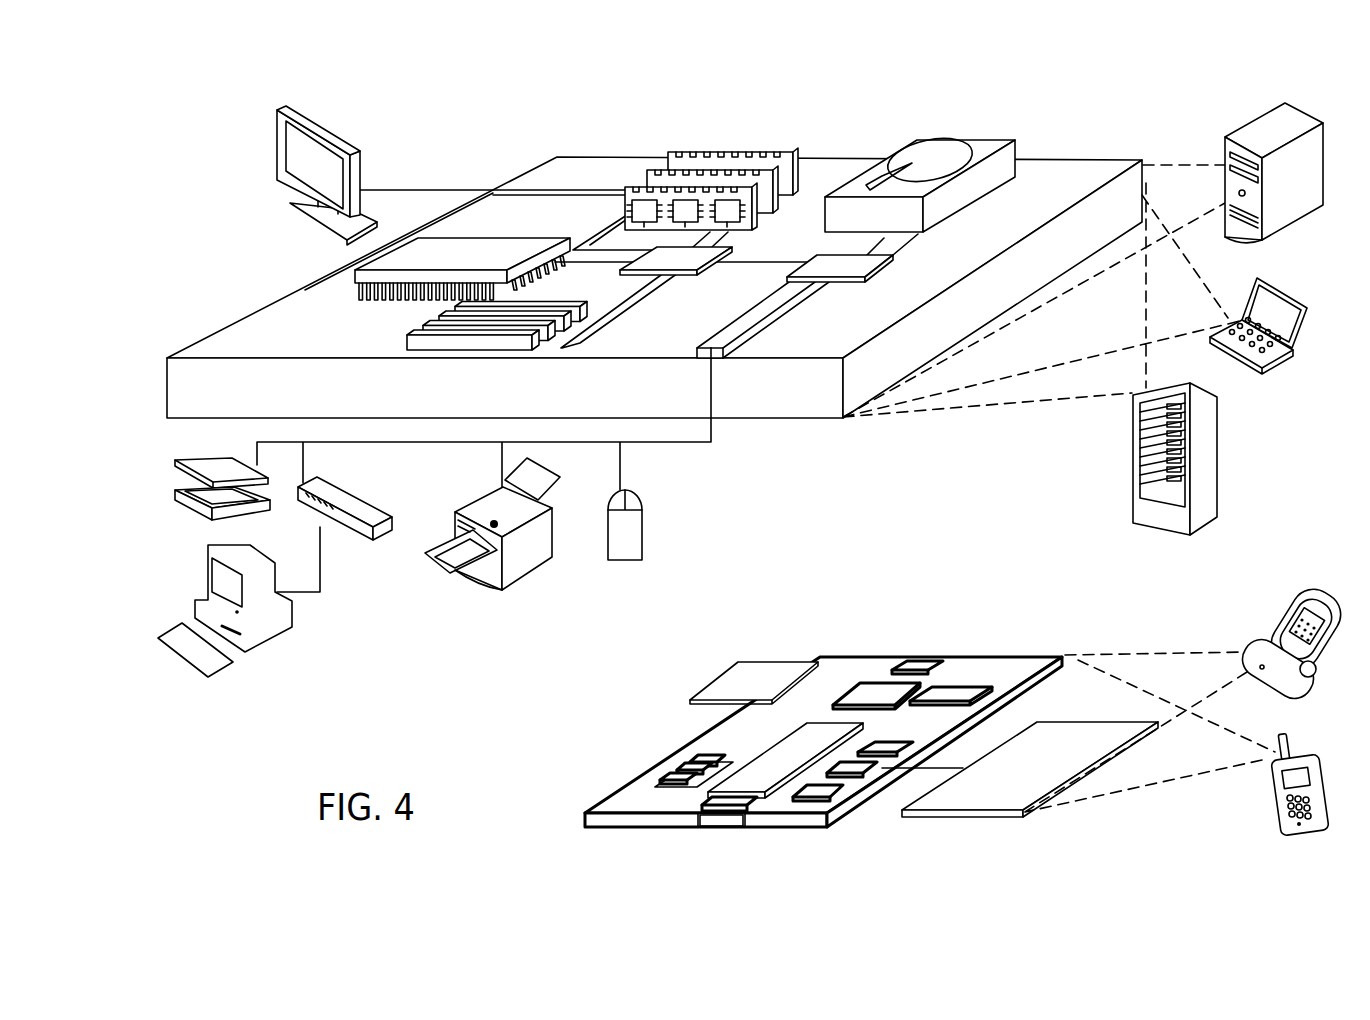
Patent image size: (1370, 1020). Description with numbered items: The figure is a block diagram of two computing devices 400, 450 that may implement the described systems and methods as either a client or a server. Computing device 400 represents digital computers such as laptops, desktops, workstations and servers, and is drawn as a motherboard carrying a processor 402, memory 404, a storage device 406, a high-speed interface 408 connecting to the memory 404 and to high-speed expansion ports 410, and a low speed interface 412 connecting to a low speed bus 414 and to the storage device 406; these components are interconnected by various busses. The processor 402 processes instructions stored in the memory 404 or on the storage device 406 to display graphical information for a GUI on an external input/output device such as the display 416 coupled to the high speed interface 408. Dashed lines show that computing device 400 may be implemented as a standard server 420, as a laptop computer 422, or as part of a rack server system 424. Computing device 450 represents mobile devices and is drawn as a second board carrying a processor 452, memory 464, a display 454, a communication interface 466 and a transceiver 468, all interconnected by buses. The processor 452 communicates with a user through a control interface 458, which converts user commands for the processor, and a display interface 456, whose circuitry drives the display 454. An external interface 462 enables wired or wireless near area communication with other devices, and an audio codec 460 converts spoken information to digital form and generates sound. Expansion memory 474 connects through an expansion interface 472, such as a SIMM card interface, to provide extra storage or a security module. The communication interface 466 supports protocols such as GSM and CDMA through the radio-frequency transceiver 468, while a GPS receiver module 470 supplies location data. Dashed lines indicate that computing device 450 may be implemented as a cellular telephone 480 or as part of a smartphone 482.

The computing device 400 is at (476, 124).
The processor 402 is at (312, 285).
The memory 404 is at (679, 150).
The storage device 406 is at (906, 133).
The high-speed interface 408 is at (649, 257).
The high-speed expansion ports 410 is at (437, 323).
The low speed interface 412 is at (842, 270).
The low speed bus 414 is at (724, 358).
The display 416 is at (275, 118).
The standard server 420 is at (1226, 147).
The laptop computer 422 is at (1260, 280).
The rack server system 424 is at (1133, 484).
The computing device 450 is at (805, 625).
The processor 452 is at (752, 806).
The display 454 is at (1027, 812).
The display interface 456 is at (838, 795).
The control interface 458 is at (860, 770).
The audio codec 460 is at (882, 757).
The external interface 462 is at (723, 818).
The memory 464 is at (676, 776).
The communication interface 466 is at (870, 692).
The transceiver 468 is at (950, 696).
The GPS receiver module 470 is at (922, 657).
The expansion interface 472 is at (795, 670).
The expansion memory 474 is at (740, 663).
The cellular telephone 480 is at (1290, 598).
The smartphone 482 is at (1284, 738).